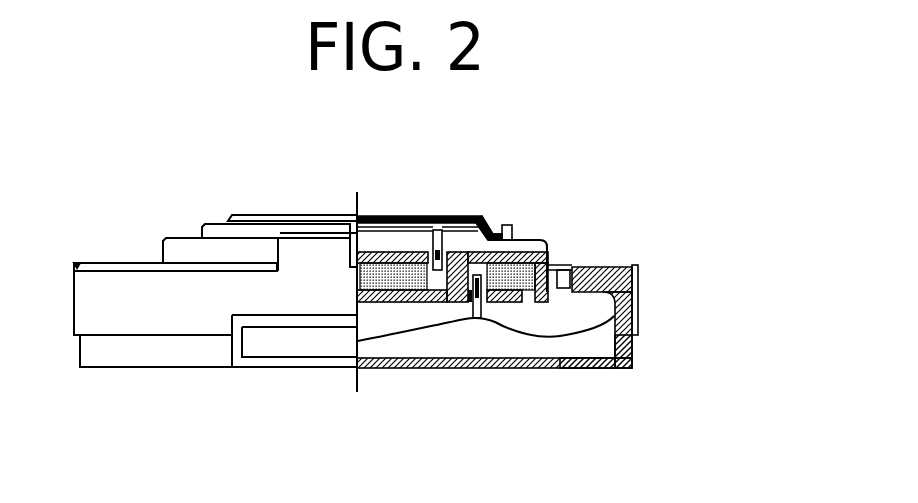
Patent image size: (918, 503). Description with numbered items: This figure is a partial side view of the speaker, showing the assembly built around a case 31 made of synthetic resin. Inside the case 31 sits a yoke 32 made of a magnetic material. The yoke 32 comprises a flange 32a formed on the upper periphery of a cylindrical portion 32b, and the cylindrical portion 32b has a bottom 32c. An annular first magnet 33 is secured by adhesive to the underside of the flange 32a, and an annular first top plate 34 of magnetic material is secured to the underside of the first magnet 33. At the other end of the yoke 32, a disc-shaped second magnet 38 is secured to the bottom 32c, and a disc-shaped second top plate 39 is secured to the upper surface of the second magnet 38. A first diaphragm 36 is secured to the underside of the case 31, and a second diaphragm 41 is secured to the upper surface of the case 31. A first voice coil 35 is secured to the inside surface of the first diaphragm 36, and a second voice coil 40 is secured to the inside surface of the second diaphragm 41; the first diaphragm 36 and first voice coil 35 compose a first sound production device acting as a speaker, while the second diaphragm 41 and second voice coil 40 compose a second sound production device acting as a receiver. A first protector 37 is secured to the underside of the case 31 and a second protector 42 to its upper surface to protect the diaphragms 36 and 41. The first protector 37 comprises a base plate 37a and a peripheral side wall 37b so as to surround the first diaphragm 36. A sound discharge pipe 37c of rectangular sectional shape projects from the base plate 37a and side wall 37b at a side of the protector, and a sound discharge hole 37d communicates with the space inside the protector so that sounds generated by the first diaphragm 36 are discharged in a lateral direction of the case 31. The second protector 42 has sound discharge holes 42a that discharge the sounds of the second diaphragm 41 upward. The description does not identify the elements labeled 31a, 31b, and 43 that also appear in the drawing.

The case 31 is at (609, 277).
The housing upper portion 31a is at (576, 263).
The housing projection 31b is at (511, 244).
The yoke 32 is at (463, 306).
The flange 32a is at (517, 228).
The cylindrical portion 32b is at (467, 312).
The bottom 32c is at (432, 307).
The first magnet 33 is at (492, 307).
The first top plate 34 is at (513, 307).
The first voice coil 35 is at (462, 307).
The first diaphragm 36 is at (592, 330).
The first protector 37 is at (574, 392).
The base plate 37a is at (587, 368).
The peripheral side wall 37b is at (633, 343).
The sound discharge pipe 37c is at (231, 349).
The sound discharge hole 37d is at (305, 348).
The second magnet 38 is at (369, 252).
The second top plate 39 is at (395, 252).
The second voice coil 40 is at (437, 227).
The second diaphragm 41 is at (487, 232).
The second protector 42 is at (233, 217).
The sound discharge holes 42a is at (422, 217).
The outer film 43 is at (640, 266).